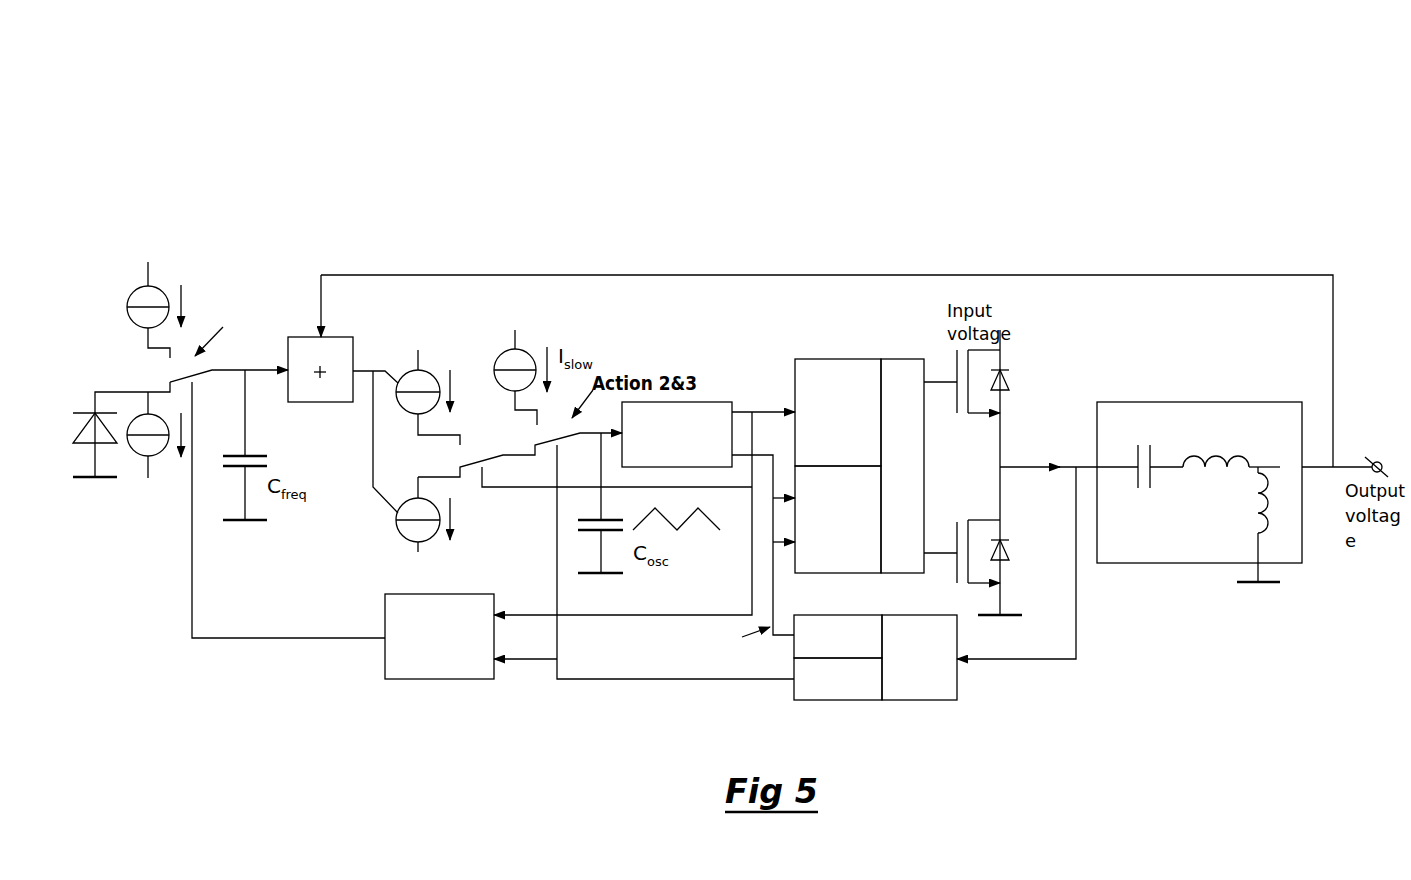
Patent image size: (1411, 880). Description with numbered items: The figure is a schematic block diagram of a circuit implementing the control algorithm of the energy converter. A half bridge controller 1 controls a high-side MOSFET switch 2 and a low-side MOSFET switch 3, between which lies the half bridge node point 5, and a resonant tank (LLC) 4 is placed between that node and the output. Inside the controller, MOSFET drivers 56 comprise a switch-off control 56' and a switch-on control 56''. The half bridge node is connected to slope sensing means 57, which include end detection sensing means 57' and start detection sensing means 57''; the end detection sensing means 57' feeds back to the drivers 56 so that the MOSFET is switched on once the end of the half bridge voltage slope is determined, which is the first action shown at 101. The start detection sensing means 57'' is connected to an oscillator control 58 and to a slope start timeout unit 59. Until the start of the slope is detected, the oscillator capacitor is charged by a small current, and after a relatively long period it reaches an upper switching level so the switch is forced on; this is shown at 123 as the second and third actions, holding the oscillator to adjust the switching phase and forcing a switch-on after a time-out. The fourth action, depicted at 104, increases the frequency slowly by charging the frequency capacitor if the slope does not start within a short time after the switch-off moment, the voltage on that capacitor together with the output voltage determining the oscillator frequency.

The half bridge controller 1 is at (785, 230).
The high-side switch 2 is at (1012, 355).
The low-side switch 3 is at (1025, 575).
The resonant tank (LLC) 4 is at (1200, 417).
The half bridge node point 5 is at (993, 473).
The MOSFET drivers 56 is at (910, 351).
The switch-off control 56' is at (838, 298).
The switch-on control 56'' is at (850, 385).
The slope sensing means 57 is at (919, 687).
The end detection sensing means 57' is at (812, 687).
The start detection sensing means 57'' is at (838, 708).
The oscillator control 58 is at (632, 410).
The slope start timeout unit 59 is at (455, 668).
The Action 1 101 is at (660, 655).
The Action 4 104 is at (240, 303).
The Actions 2 and 3 123 is at (655, 373).